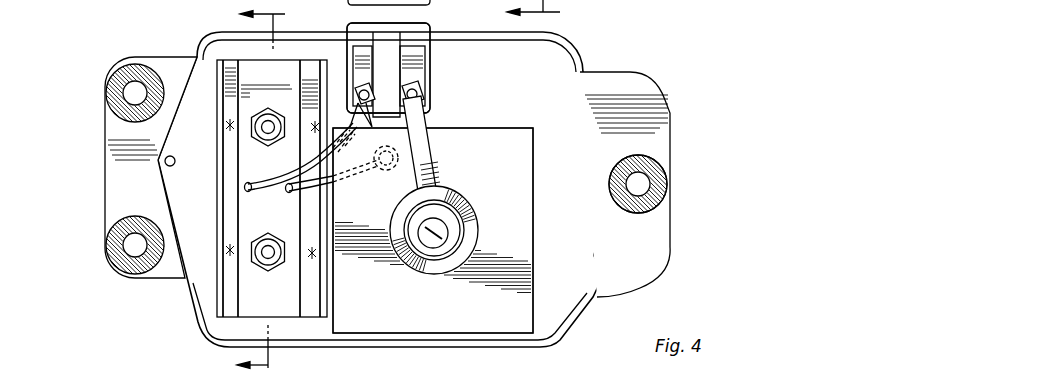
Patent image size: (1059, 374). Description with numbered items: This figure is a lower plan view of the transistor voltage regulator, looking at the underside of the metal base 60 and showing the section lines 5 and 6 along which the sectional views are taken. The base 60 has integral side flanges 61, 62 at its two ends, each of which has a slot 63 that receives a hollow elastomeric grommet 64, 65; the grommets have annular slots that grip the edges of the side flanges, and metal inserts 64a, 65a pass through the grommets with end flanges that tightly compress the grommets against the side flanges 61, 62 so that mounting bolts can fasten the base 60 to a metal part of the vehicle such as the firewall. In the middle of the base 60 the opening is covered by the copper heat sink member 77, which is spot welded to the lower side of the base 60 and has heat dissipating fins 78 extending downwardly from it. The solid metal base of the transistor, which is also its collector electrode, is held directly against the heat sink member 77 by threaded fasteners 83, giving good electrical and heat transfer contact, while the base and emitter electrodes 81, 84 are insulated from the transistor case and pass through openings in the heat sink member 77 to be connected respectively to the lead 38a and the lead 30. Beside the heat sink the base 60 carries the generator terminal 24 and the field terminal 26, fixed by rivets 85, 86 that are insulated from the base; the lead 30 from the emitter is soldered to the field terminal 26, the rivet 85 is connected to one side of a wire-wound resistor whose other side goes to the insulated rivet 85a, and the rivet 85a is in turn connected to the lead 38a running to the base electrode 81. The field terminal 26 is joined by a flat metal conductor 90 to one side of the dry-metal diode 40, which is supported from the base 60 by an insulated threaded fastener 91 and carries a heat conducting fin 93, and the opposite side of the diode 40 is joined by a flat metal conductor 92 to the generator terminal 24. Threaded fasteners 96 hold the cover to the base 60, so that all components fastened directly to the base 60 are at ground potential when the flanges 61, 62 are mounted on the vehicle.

The section line 5— 5 is at (245, 189).
The section line 6— 6 is at (541, 12).
The generator terminal 24 is at (415, 24).
The field terminal 26 is at (360, 24).
The lead 30 is at (282, 178).
The lead 38a is at (335, 185).
The diode 40 is at (534, 200).
The metal base 60 is at (558, 63).
The side flange 61 is at (635, 103).
The side flange 62 is at (116, 137).
The slot 63 is at (668, 165).
The elastomeric grommet 64 is at (650, 200).
The metal insert 64a is at (656, 187).
The elastomeric grommet 65 is at (128, 80).
The metal insert 65a is at (120, 80).
The heat sink member 77 is at (287, 307).
The heat dissipating fins 78 is at (218, 118).
The base electrode 81 is at (288, 194).
The threaded fasteners 83 is at (268, 122).
The emitter electrode 84 is at (249, 193).
The rivet 85 is at (355, 141).
The rivet 85a is at (398, 158).
The rivet 86 is at (416, 92).
The flat metal conductor 90 is at (386, 122).
The threaded fastener 91 is at (446, 237).
The flat metal conductor 92 is at (422, 140).
The heat conducting fin 93 is at (513, 143).
The threaded fasteners 96 is at (160, 162).